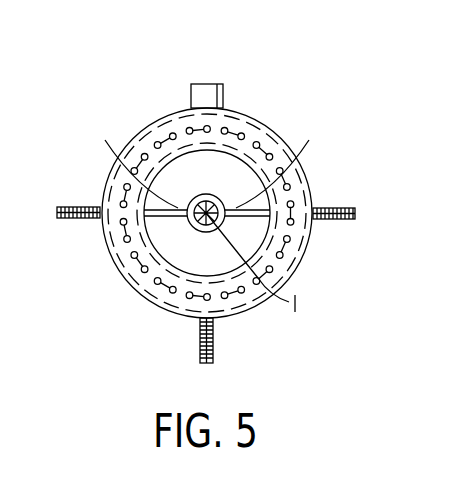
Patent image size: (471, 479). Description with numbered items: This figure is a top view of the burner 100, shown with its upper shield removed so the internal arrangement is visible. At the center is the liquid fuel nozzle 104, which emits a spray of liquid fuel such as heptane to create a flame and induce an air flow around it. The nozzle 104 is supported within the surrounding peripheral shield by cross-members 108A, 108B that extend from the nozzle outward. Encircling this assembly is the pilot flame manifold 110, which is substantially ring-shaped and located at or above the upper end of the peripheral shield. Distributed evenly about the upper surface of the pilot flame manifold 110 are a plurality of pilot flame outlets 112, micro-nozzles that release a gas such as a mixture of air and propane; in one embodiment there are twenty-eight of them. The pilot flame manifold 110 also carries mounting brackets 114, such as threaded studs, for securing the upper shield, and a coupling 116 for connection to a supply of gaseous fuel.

The burner 100 is at (347, 58).
The liquid fuel nozzle 104 is at (193, 227).
The cross-member 108A is at (132, 160).
The cross-member 108B is at (279, 161).
The pilot flame manifold 110 is at (110, 182).
The pilot flame outlets 112 is at (187, 297).
The mounting brackets 114 is at (77, 222).
The coupling 116 is at (205, 84).